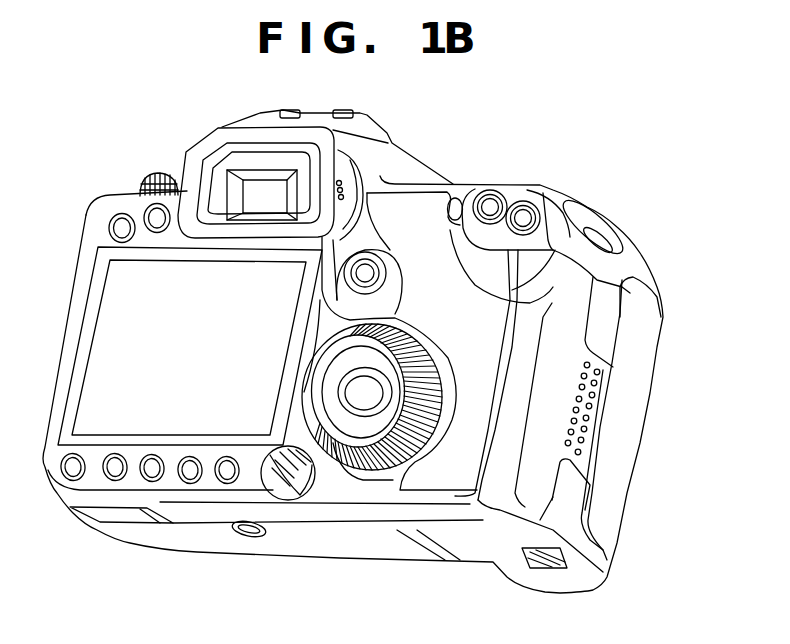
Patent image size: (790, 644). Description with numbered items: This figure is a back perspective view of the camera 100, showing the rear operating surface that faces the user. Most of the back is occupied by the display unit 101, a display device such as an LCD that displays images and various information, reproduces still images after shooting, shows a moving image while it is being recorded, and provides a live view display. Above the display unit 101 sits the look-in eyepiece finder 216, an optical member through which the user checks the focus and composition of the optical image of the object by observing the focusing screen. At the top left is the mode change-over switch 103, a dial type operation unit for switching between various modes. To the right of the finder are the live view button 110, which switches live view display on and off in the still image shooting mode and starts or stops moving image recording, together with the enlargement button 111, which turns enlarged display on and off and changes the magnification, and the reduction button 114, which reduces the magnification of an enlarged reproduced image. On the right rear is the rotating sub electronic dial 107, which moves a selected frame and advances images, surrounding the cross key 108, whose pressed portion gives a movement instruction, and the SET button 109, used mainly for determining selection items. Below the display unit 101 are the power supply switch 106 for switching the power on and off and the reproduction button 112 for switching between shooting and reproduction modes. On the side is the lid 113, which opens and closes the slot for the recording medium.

The camera 100 is at (648, 163).
The display unit 101 is at (133, 297).
The mode change-over switch 103 is at (143, 172).
The power supply switch 106 is at (287, 500).
The sub electronic dial 107 is at (348, 427).
The cross key 108 is at (342, 468).
The SET button 109 is at (365, 392).
The live view button 110 is at (365, 273).
The enlargement button 111 is at (520, 217).
The reproduction button 112 is at (227, 465).
The lid 113 is at (563, 393).
The reduction button 114 is at (487, 207).
The look-in eyepiece finder 216 is at (263, 200).